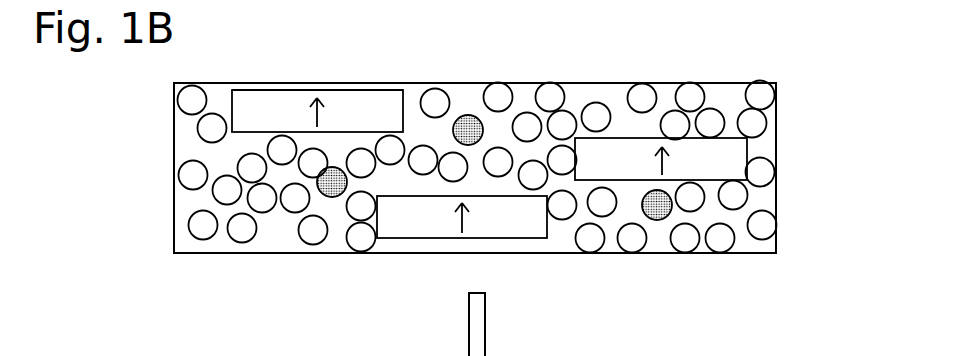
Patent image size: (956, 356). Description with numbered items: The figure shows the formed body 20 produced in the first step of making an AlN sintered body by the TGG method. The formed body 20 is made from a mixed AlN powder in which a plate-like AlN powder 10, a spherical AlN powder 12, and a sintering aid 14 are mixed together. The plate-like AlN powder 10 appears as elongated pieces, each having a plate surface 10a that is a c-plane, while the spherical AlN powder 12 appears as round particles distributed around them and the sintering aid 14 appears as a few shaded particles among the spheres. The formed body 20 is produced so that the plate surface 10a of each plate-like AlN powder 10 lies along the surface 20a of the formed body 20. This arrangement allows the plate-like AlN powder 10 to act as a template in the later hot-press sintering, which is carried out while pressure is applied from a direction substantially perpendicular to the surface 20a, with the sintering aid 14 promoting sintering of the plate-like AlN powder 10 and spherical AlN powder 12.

The plate-like AlN powder 10 is at (369, 104).
The plate surface 10a is at (280, 88).
The spherical AlN powder 12 is at (240, 228).
The sintering aid 14 is at (332, 186).
The formed body 20 is at (760, 65).
The surface 20a is at (615, 82).